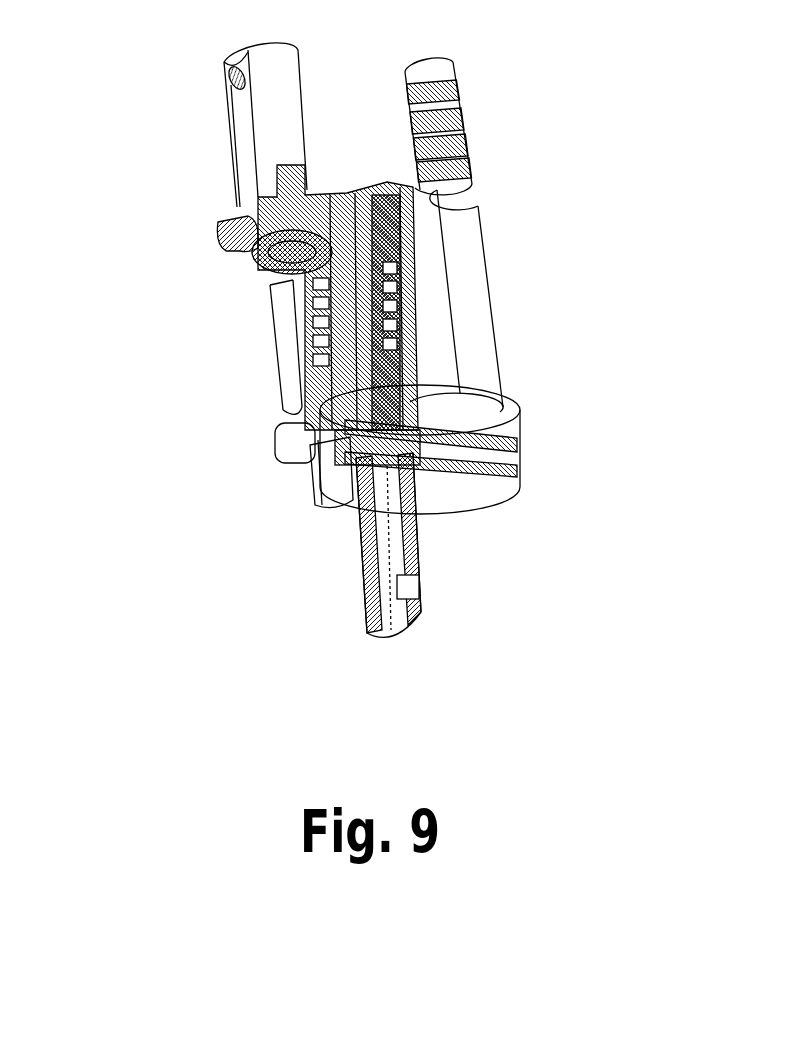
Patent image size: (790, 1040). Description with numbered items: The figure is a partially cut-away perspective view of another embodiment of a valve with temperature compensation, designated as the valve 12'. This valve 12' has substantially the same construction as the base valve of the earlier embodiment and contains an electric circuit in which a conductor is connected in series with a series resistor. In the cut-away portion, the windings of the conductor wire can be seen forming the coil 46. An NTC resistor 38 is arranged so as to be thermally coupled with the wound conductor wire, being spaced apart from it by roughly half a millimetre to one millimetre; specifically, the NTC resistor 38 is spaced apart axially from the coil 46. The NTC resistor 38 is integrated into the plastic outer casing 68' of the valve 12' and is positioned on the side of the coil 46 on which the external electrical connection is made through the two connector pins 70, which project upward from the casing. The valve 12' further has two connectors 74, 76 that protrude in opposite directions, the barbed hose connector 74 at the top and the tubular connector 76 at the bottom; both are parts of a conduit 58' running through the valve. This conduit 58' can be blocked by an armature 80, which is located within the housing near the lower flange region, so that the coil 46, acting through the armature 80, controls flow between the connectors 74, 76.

The valve 12' is at (546, 285).
The NTC resistor 38 is at (318, 262).
The coil 46 is at (330, 360).
The conduit 58' is at (492, 566).
The plastic outer casing 68' is at (338, 265).
The connector pins 70 is at (242, 128).
The connector 74 is at (445, 107).
The connector 76 is at (360, 603).
The armature 80 is at (390, 437).